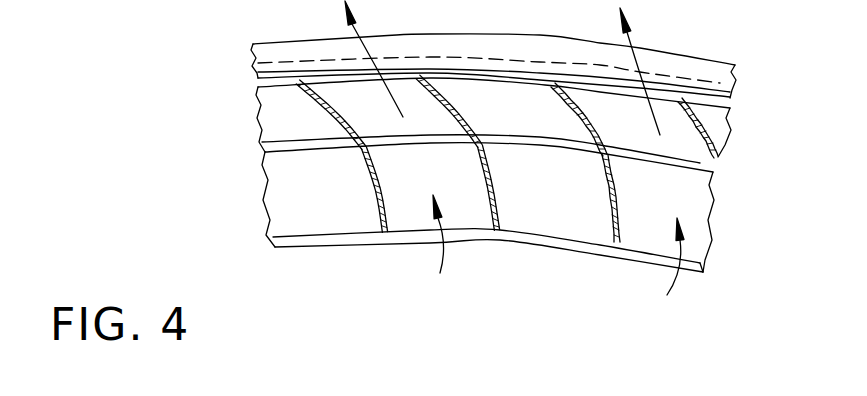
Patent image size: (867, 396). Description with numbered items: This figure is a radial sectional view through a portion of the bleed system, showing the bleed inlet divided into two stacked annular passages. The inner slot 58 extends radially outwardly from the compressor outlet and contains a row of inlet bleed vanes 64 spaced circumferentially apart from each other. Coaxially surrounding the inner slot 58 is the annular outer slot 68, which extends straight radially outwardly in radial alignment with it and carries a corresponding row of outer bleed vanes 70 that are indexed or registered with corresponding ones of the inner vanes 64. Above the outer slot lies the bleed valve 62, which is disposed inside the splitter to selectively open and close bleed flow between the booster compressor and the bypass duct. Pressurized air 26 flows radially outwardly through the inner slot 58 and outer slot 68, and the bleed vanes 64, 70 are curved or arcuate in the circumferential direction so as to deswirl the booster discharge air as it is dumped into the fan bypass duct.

The air 26 is at (450, 255).
The inner slot 58 is at (565, 206).
The bleed valve 62 is at (698, 56).
The inlet bleed vanes 64 is at (367, 172).
The outer slot 68 is at (527, 119).
The outer bleed vanes 70 is at (448, 93).